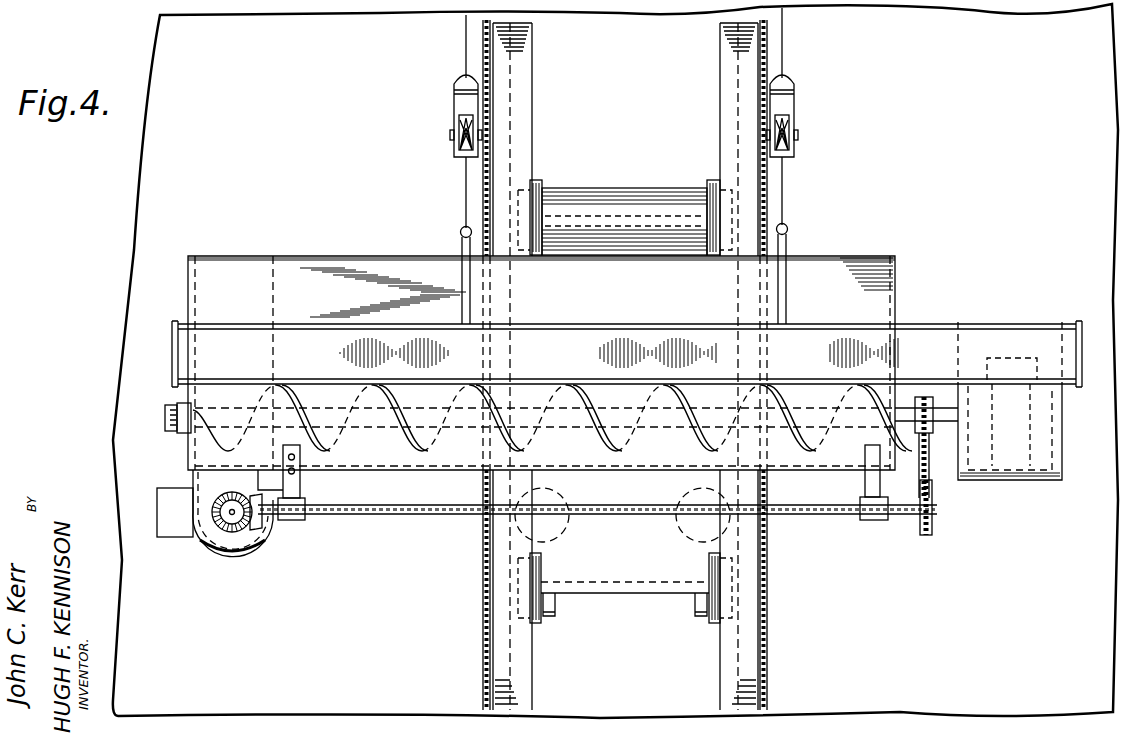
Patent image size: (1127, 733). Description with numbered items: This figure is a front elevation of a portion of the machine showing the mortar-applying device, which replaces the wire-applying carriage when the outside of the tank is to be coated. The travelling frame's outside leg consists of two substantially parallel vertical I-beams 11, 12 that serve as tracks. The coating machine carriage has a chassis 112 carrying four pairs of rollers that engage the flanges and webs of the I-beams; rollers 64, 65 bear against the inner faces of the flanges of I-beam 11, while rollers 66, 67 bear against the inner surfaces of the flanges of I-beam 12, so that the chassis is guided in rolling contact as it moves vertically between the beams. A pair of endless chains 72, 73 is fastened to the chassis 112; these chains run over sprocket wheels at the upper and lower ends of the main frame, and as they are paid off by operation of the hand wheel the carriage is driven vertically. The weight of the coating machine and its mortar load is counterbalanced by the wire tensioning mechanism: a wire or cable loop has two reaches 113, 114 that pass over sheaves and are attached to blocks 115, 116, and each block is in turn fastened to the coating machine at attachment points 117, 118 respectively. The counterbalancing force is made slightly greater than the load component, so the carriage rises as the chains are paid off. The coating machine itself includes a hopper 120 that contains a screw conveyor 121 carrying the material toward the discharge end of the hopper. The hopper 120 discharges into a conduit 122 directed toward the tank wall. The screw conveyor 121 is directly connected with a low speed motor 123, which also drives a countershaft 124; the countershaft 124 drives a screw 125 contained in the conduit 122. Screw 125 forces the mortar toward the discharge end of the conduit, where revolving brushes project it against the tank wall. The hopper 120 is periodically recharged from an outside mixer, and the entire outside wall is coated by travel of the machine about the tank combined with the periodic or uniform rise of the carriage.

The I-beam 11 is at (527, 84).
The I-beam 12 is at (722, 87).
The roller 64 is at (536, 624).
The roller 65 is at (533, 180).
The roller 66 is at (724, 185).
The roller 67 is at (718, 625).
The endless chain 72 is at (485, 184).
The endless chain 73 is at (768, 190).
The chassis 112 is at (662, 172).
The reach 113 is at (466, 37).
The reach 114 is at (782, 50).
The block 115 is at (462, 102).
The block 116 is at (795, 100).
The attachment point 117 is at (461, 234).
The attachment point 118 is at (788, 233).
The hopper 120 is at (880, 300).
The screw conveyor 121 is at (795, 378).
The conduit 122 is at (195, 480).
The low speed motor 123 is at (1028, 472).
The countershaft 124 is at (803, 517).
The screw 125 is at (200, 546).